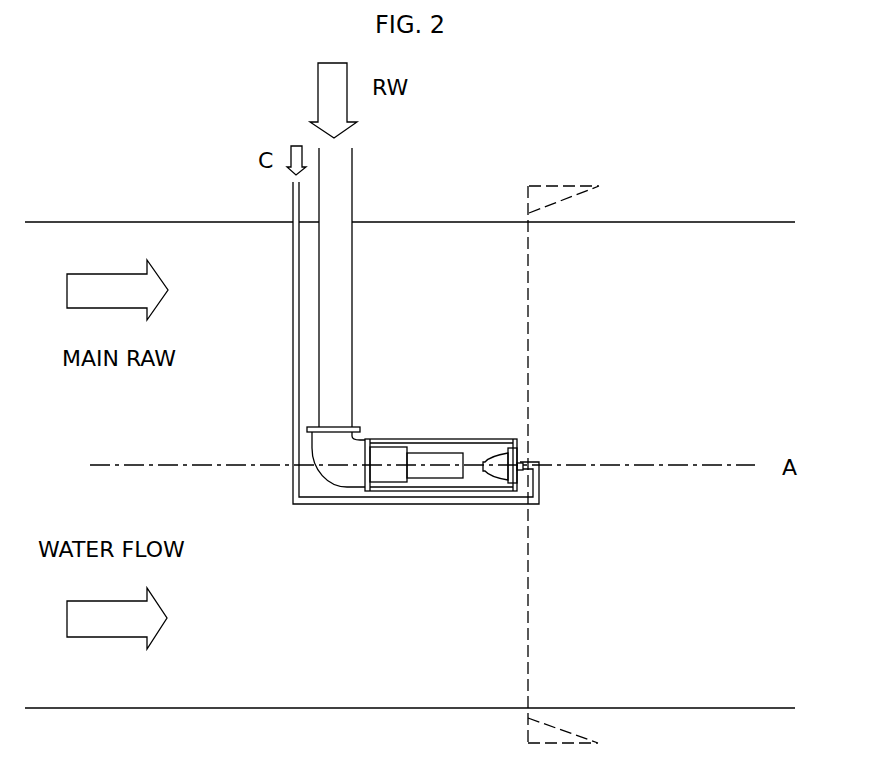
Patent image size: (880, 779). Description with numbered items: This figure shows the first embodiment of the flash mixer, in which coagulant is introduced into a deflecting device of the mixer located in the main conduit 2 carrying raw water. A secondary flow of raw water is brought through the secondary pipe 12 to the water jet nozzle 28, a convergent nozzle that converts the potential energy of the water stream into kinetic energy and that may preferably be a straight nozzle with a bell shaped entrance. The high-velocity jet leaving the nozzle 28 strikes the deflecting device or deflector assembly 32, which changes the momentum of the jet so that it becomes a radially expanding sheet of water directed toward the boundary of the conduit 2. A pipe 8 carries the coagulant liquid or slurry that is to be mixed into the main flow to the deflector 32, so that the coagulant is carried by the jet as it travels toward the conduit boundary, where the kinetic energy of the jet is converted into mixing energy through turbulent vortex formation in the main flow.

The conduit 2 is at (563, 223).
The pipe 8 is at (295, 333).
The secondary pipe 12 is at (353, 277).
The nozzle 28 is at (430, 453).
The deflecting device 32 is at (507, 465).